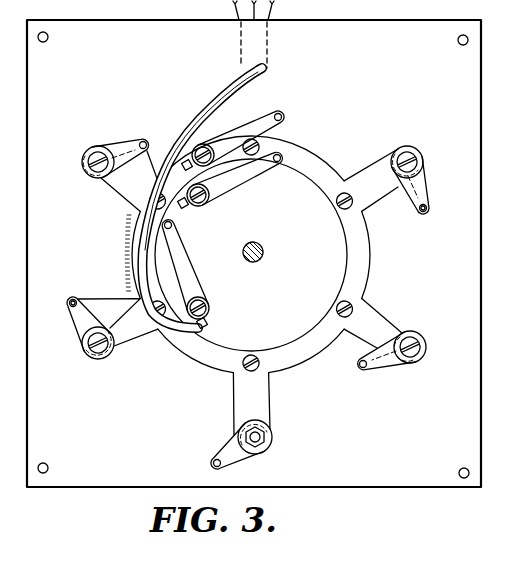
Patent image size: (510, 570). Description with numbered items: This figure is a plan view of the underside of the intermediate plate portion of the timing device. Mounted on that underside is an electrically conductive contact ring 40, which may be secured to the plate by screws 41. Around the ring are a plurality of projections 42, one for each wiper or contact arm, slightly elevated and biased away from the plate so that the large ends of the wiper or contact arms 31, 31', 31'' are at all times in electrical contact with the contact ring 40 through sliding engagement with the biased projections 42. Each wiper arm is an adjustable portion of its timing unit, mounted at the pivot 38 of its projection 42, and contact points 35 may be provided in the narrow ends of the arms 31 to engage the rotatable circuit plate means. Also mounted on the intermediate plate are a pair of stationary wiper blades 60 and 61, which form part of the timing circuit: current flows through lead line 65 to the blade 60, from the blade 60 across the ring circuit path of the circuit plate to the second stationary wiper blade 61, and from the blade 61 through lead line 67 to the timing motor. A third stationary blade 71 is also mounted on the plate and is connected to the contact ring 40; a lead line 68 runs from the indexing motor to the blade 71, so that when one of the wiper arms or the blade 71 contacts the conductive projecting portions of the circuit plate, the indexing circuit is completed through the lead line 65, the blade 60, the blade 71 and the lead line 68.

The wiper or contact arm 31 is at (274, 251).
The wiper or contact arm 31' is at (79, 328).
The wiper or contact arm 31'' is at (244, 451).
The contact point 35 is at (428, 210).
The pivot pin 38 is at (78, 303).
The contact ring 40 is at (316, 160).
The screws 41 is at (343, 209).
The projections 42 is at (372, 194).
The stationary wiper blade 60 is at (240, 193).
The stationary wiper blade 61 is at (195, 276).
The lead line 65 is at (206, 118).
The lead line 67 is at (208, 127).
The lead line 68 is at (172, 155).
The third stationary blade 71 is at (258, 114).